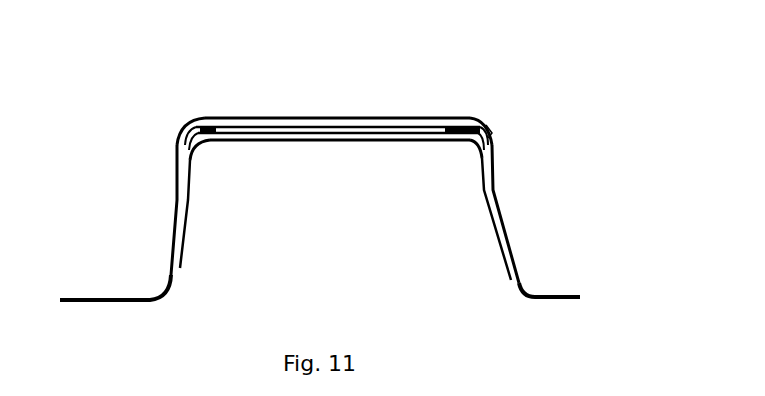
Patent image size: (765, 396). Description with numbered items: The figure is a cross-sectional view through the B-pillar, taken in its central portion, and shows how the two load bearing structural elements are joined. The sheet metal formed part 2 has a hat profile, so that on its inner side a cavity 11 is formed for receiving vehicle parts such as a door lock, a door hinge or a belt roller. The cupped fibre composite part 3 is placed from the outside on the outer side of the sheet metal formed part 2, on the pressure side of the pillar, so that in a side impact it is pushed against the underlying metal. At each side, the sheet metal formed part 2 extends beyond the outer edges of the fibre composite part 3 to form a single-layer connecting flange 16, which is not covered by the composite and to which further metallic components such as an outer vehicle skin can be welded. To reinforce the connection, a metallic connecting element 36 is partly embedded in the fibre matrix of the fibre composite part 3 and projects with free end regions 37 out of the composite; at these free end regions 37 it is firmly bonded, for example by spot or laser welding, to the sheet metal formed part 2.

The sheet metal formed part 2 is at (133, 305).
The fibre composite part 3 is at (353, 114).
The cavity 11 is at (345, 250).
The connecting flange 16 is at (107, 297).
The connecting element 36 is at (197, 128).
The free end region 37 is at (173, 180).